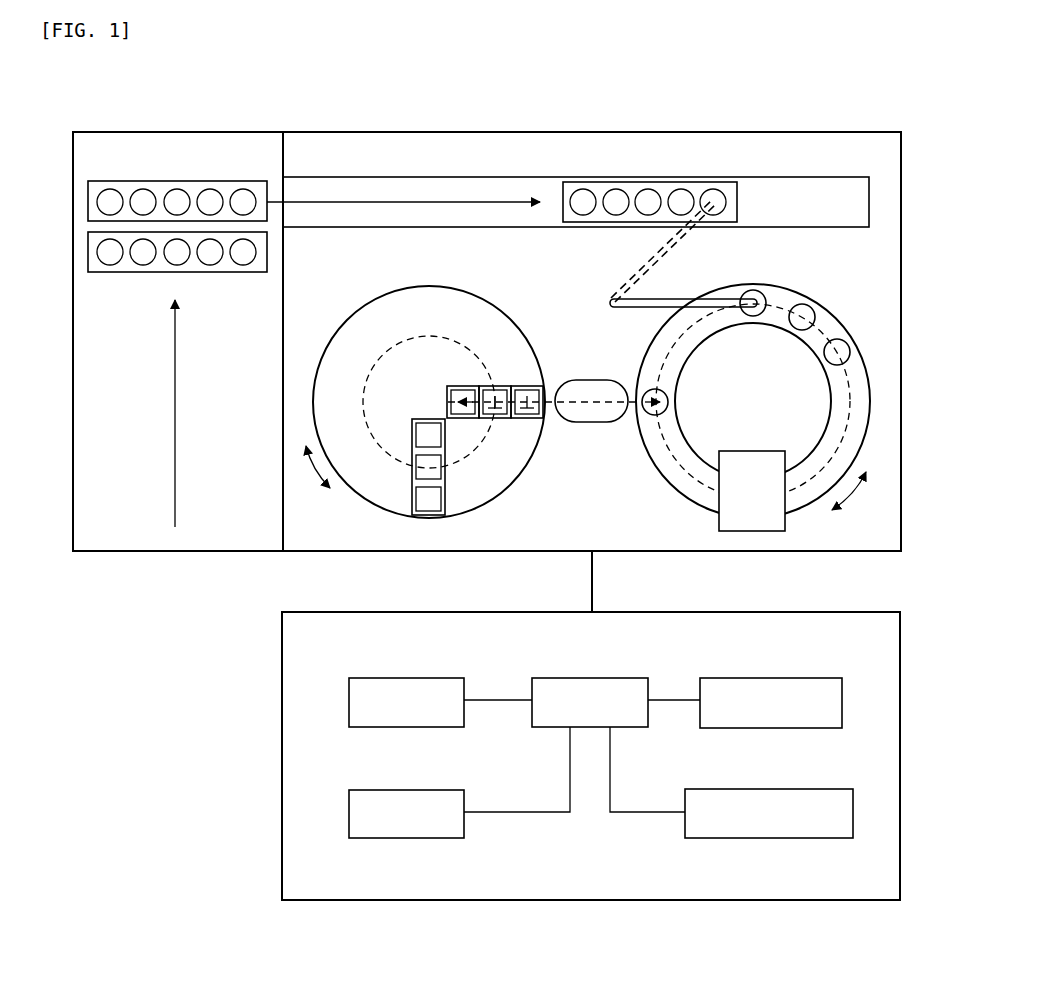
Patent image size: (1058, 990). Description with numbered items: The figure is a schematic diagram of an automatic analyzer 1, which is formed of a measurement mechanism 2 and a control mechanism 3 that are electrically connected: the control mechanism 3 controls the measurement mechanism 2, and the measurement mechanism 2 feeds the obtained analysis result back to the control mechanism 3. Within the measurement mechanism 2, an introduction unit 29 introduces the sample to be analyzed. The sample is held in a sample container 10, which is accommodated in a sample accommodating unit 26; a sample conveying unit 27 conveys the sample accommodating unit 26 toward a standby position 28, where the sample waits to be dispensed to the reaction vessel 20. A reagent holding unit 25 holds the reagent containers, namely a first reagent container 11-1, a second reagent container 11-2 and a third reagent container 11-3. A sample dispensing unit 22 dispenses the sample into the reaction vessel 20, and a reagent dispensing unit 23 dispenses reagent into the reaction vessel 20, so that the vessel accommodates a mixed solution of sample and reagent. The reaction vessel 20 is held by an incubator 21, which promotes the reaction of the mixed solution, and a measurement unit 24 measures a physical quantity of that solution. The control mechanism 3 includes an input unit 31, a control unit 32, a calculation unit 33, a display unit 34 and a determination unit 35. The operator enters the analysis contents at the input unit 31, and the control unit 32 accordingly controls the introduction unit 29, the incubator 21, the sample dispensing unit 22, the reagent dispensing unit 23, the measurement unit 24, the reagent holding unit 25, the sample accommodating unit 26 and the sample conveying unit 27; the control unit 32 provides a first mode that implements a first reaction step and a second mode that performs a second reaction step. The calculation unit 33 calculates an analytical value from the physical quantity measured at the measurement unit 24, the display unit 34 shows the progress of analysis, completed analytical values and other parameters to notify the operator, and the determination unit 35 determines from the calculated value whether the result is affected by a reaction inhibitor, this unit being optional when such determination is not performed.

The automatic analyzer 1 is at (521, 110).
The measurement mechanism 2 is at (901, 252).
The control mechanism 3 is at (900, 683).
The sample container 10 is at (550, 185).
The first reagent container 11-1 is at (463, 386).
The second reagent container 11-2 is at (497, 386).
The third reagent container 11-3 is at (511, 386).
The reaction vessel 20 is at (673, 393).
The incubator 21 is at (661, 478).
The sample dispensing unit 22 is at (643, 310).
The reagent dispensing unit 23 is at (580, 413).
The measurement unit 24 is at (743, 467).
The reagent holding unit 25 is at (515, 473).
The sample accommodating unit 26 is at (198, 272).
The sample conveying unit 27 is at (355, 187).
The standby position 28 is at (722, 173).
The introduction unit 29 is at (172, 552).
The input unit 31 is at (398, 678).
The control unit 32 is at (593, 678).
The calculation unit 33 is at (775, 678).
The display unit 34 is at (400, 790).
The determination unit 35 is at (770, 789).